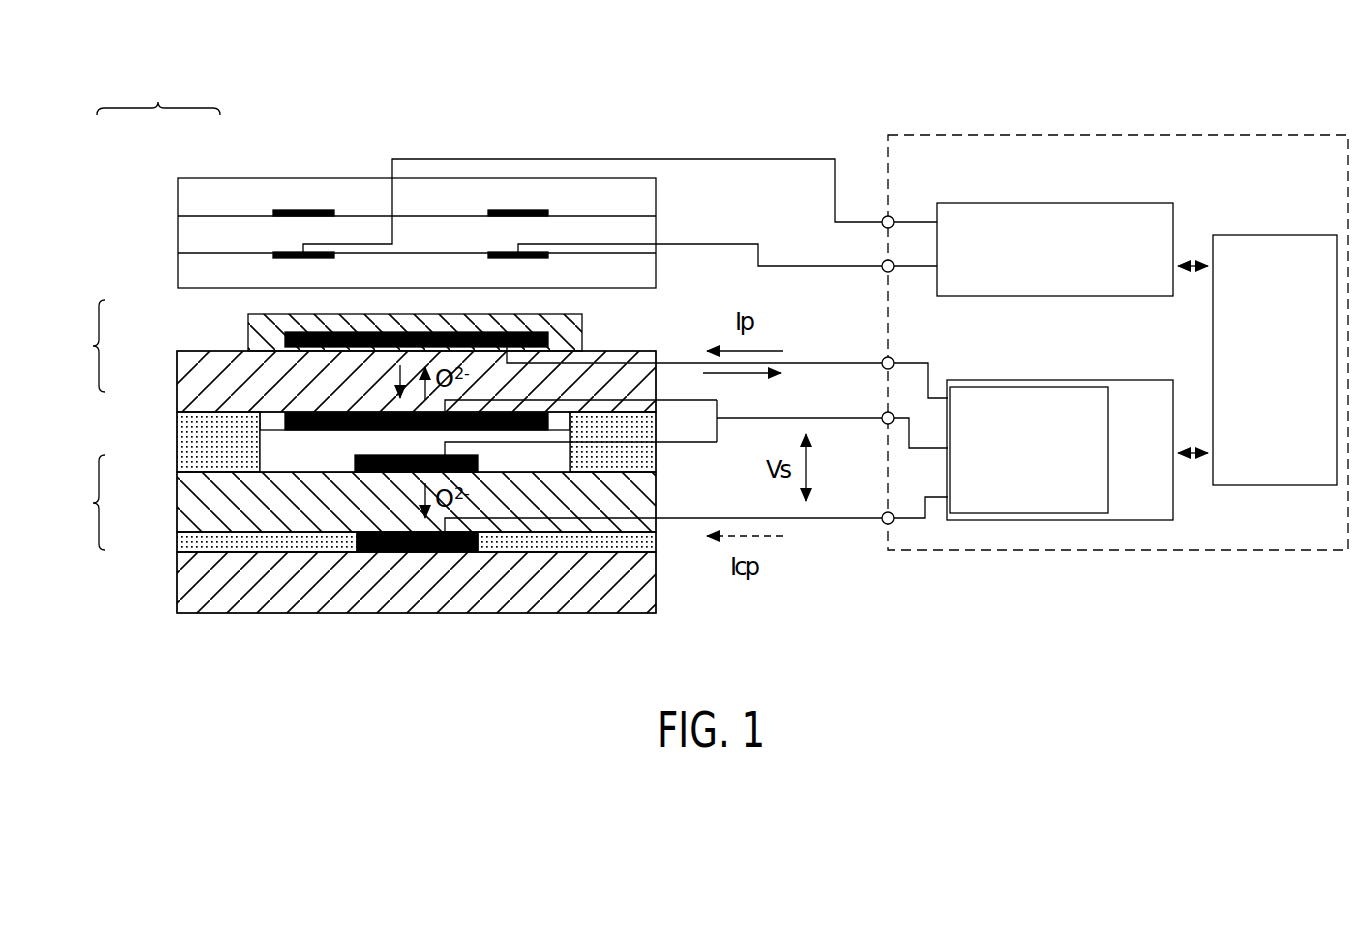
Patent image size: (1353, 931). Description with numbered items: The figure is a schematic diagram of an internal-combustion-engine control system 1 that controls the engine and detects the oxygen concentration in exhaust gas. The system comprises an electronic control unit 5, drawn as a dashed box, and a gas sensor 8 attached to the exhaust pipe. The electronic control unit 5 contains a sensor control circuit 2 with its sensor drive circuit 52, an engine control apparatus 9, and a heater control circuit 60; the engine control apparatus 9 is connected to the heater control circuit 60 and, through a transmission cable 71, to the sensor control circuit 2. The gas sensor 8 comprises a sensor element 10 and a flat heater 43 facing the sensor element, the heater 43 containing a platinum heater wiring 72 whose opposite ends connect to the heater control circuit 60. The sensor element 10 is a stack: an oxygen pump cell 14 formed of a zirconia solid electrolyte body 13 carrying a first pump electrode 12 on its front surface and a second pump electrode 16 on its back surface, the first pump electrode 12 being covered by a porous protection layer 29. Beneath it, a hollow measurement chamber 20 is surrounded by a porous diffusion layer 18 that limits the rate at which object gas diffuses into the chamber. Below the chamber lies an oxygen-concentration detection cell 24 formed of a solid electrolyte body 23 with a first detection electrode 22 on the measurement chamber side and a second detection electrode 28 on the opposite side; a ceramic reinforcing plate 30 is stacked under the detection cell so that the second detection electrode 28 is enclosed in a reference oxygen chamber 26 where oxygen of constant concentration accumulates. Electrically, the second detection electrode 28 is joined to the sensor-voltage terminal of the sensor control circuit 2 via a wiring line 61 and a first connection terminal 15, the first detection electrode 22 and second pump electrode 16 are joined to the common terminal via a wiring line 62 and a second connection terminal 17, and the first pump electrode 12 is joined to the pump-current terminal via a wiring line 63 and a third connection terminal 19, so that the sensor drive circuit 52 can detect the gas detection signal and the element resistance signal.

The internal-combustion-engine control system 1 is at (929, 86).
The sensor control circuit 2 is at (1070, 520).
The electronic control unit 5 is at (1143, 135).
The gas sensor 8 is at (158, 96).
The engine control apparatus 9 is at (1275, 235).
The sensor element 10 is at (131, 281).
The first pump electrode 12 is at (300, 350).
The solid electrolyte body 13 is at (200, 372).
The oxygen pump cell 14 is at (91, 346).
The first connection terminal 15 is at (886, 525).
The second pump electrode 16 is at (316, 410).
The second connection terminal 17 is at (886, 425).
The porous diffusion layer 18 is at (195, 428).
The third connection terminal 19 is at (886, 357).
The measurement chamber 20 is at (277, 441).
The first detection electrode 22 is at (352, 457).
The solid electrolyte body 23 is at (200, 520).
The oxygen-concentration detection cell 24 is at (91, 502).
The reference oxygen chamber 26 is at (478, 552).
The second detection electrode 28 is at (357, 550).
The porous protection layer 29 is at (560, 322).
The reinforcing plate 30 is at (178, 590).
The heater 43 is at (218, 178).
The sensor drive circuit 52 is at (1030, 387).
The heater control circuit 60 is at (1030, 203).
The wiring line 61 is at (818, 518).
The wiring line 62 is at (775, 418).
The wiring line 63 is at (805, 363).
The transmission cable 71 is at (1190, 455).
The heater wiring 72 is at (548, 258).